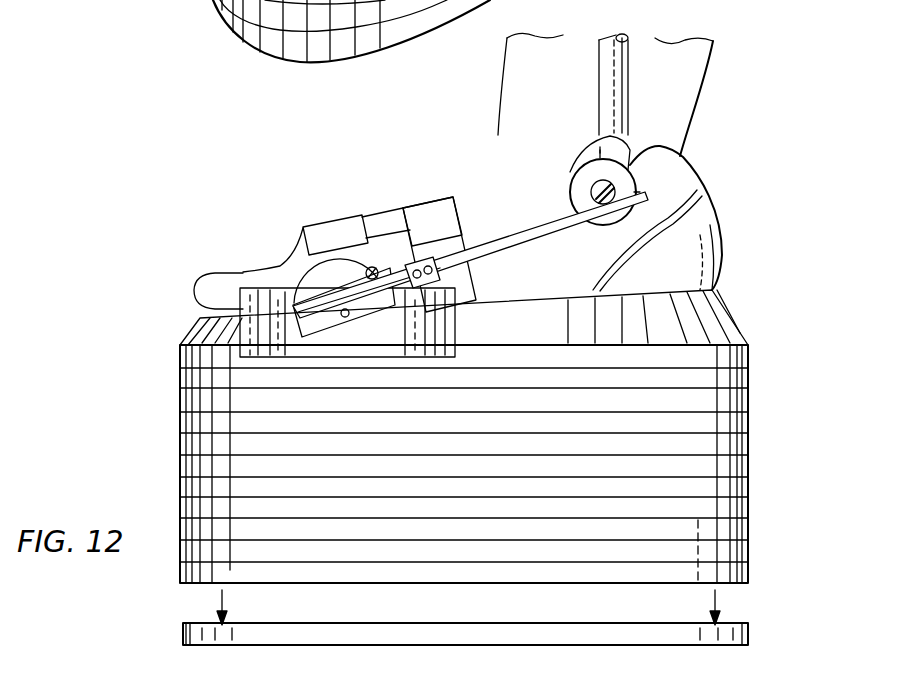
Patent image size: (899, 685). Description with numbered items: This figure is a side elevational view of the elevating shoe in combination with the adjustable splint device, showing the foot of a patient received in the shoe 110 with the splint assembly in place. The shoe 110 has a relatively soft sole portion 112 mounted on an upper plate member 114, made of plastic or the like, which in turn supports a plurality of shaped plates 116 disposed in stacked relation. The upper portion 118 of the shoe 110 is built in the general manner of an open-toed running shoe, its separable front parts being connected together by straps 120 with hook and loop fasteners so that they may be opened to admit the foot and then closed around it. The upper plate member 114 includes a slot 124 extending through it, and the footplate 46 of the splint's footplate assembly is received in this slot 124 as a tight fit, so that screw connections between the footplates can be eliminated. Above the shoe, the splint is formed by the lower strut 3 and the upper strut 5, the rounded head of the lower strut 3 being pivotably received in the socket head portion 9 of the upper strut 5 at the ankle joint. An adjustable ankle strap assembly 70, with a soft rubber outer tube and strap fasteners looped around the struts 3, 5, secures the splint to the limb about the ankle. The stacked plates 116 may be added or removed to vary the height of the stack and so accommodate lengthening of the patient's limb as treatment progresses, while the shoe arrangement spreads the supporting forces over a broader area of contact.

The lower strut 3 is at (525, 249).
The upper strut 5 is at (628, 52).
The socket head portion 9 is at (627, 193).
The footplate 46 is at (249, 289).
The adjustable ankle strap assembly 70 is at (469, 132).
The shoe 110 is at (705, 238).
The sole portion 112 is at (718, 328).
The upper plate member 114 is at (200, 330).
The shaped plates 116 is at (737, 397).
The upper portion 118 is at (705, 268).
The straps 120 is at (417, 213).
The slot 124 is at (233, 347).